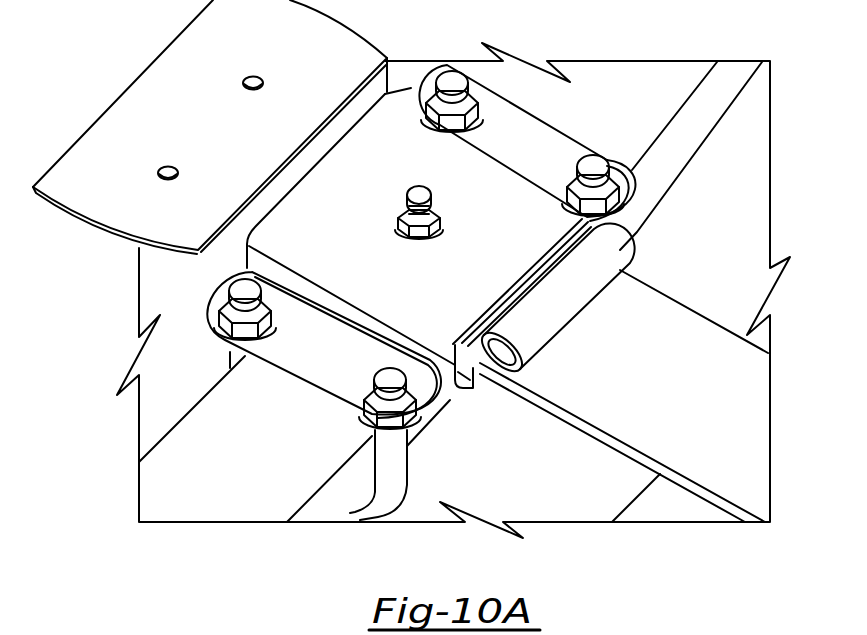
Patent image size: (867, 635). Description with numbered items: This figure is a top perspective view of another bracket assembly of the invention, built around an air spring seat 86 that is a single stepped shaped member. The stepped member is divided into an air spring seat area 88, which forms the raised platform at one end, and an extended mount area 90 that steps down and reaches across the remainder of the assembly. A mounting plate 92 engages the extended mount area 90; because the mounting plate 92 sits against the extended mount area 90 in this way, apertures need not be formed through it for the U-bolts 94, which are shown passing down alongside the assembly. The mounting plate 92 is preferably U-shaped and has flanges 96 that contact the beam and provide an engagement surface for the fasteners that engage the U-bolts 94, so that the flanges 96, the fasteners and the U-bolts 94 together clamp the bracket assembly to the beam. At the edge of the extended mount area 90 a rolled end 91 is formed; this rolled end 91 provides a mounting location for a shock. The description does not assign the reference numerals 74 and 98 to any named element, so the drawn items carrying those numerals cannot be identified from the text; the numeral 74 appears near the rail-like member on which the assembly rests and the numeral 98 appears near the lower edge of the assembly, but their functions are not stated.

The rail 74 is at (682, 396).
The air spring seat 86 is at (424, 78).
The air spring seat area 88 is at (219, 130).
The extended mount area 90 is at (508, 299).
The rolled end 91 is at (576, 292).
The mounting plate 92 is at (484, 284).
The U-bolts 94 is at (399, 482).
The flanges 96 is at (537, 154).
The bolt 98 is at (472, 378).